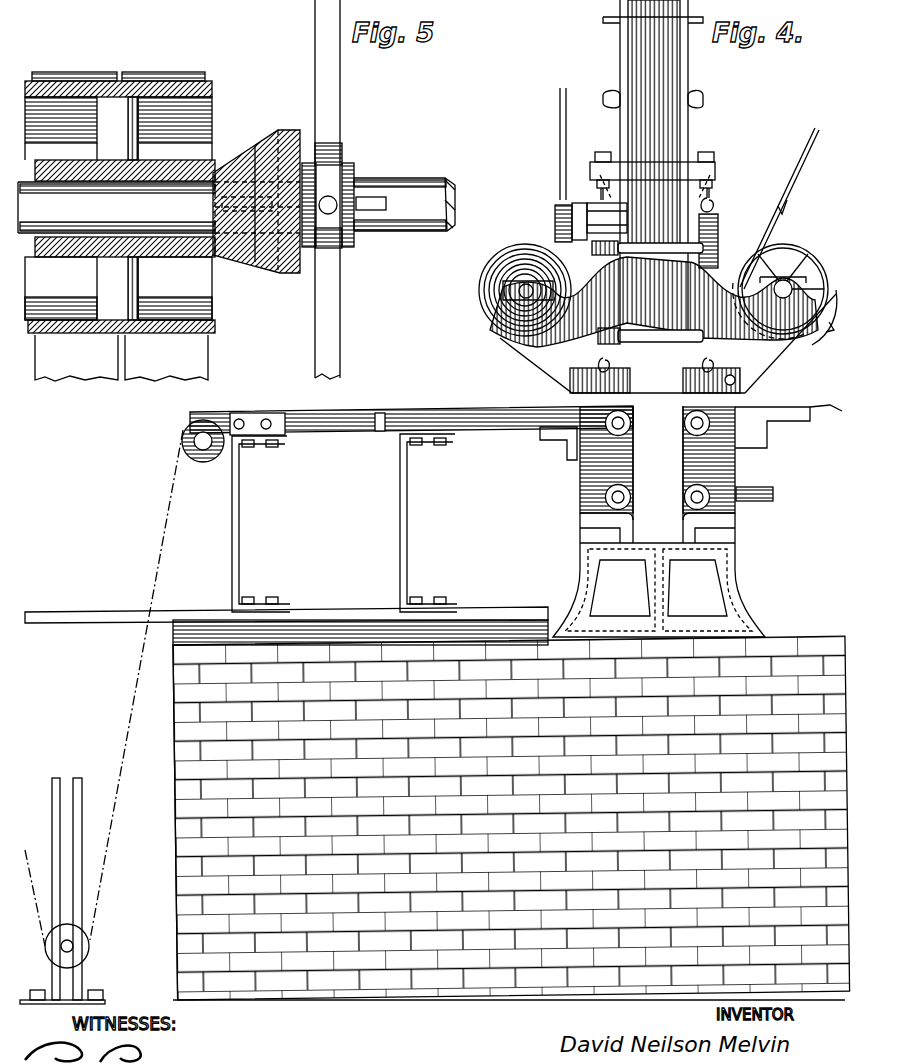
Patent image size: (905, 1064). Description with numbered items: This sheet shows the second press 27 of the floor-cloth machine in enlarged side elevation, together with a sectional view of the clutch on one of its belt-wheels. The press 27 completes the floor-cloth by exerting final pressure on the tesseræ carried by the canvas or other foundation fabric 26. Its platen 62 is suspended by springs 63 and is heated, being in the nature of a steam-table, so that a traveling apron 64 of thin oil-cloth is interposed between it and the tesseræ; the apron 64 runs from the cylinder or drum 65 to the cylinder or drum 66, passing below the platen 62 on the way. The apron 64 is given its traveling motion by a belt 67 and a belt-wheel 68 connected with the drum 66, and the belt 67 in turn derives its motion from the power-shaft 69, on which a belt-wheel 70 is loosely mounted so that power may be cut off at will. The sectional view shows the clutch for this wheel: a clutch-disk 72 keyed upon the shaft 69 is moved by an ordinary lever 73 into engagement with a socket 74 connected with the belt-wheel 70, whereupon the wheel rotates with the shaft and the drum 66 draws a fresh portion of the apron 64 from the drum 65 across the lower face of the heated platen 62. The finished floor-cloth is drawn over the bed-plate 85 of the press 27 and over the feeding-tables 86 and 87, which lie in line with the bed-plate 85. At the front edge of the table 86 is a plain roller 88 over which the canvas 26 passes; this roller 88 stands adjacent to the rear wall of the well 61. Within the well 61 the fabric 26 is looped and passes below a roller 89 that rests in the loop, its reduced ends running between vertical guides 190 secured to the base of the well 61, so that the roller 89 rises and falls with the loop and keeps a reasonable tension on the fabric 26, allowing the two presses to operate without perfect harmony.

In FIG. 4, the canvas or other foundation fabric 26 is at (160, 548).
In FIG. 4, the second press 27 is at (640, 125).
In FIG. 4, the well 61 is at (286, 644).
In FIG. 4, the platen 62 is at (580, 368).
In FIG. 4, the springs 63 is at (718, 230).
In FIG. 4, the traveling apron 64 is at (534, 355).
In FIG. 4, the cylinder or drum 65 is at (522, 262).
In FIG. 4, the cylinder or drum 66 is at (786, 282).
In FIG. 5, the belt 67 is at (121, 358).
In FIG. 4, the belt 67 is at (788, 260).
In FIG. 4, the belt-wheel 68 is at (758, 242).
In FIG. 5, the power-shaft 69 is at (412, 181).
In FIG. 5, the belt-wheel 70 is at (200, 283).
In FIG. 5, the clutch-disk 72 is at (293, 277).
In FIG. 5, the lever 73 is at (340, 300).
In FIG. 5, the socket 74 is at (228, 145).
In FIG. 4, the bed-plate 85 is at (568, 420).
In FIG. 4, the feeding-table 86 is at (345, 432).
In FIG. 4, the feeding-table 87 is at (788, 427).
In FIG. 4, the plain roller 88 is at (203, 455).
In FIG. 4, the roller 89 is at (89, 946).
In FIG. 4, the vertical guides 190 is at (62, 877).